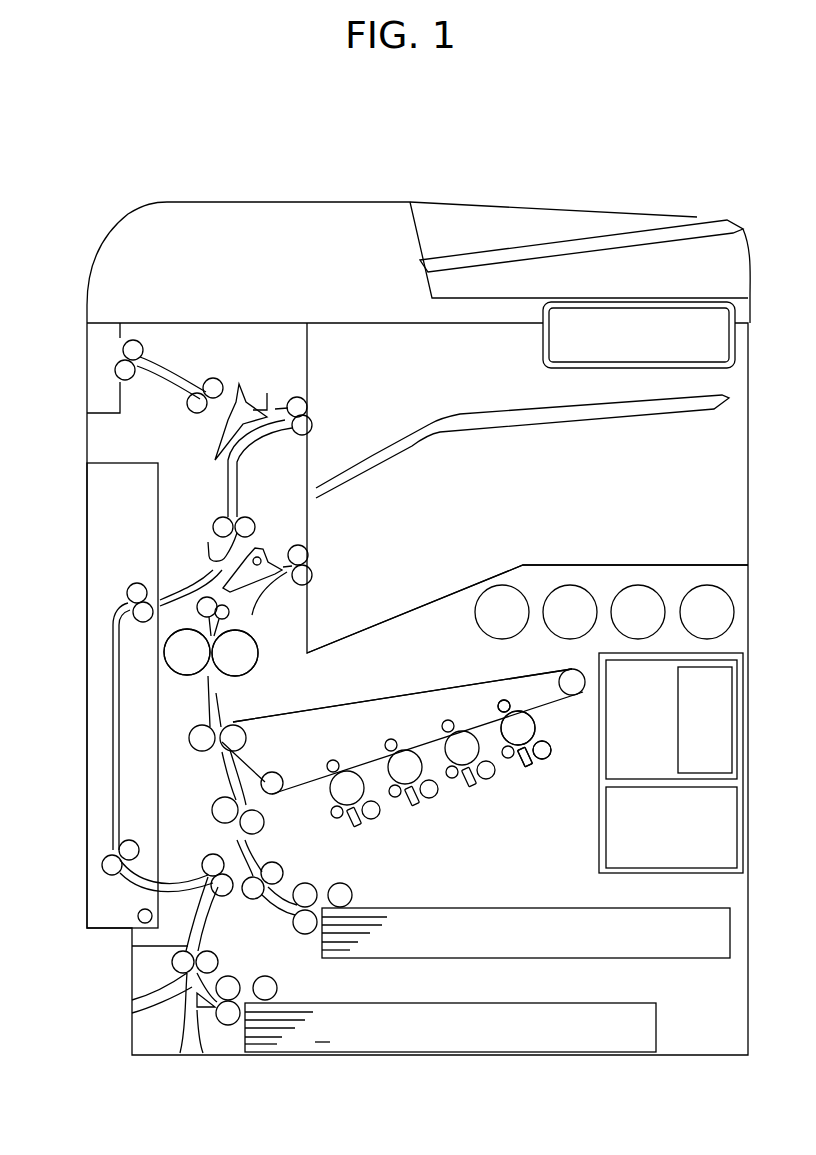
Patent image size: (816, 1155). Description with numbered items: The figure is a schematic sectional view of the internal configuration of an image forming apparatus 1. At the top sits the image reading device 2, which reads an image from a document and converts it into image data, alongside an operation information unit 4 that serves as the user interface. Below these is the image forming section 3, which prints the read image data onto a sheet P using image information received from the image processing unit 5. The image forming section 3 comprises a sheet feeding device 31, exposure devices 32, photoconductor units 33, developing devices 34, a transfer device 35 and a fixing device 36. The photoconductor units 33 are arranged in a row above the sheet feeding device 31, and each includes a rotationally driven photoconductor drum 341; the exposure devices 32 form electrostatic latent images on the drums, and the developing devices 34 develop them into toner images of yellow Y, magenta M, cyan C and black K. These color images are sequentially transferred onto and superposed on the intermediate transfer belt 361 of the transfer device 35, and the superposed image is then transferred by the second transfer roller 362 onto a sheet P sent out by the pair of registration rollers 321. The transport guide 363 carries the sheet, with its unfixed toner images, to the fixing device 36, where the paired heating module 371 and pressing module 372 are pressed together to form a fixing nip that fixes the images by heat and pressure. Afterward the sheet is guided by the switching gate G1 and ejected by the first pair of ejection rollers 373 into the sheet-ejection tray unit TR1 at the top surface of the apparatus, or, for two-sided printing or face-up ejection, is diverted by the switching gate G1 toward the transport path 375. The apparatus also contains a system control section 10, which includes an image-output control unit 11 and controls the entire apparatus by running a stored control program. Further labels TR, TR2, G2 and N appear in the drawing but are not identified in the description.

The image forming apparatus 1 is at (100, 198).
The image reading device 2 is at (276, 281).
The operation information unit 4 is at (649, 352).
The image processing unit 5 is at (682, 842).
The system control section 10 is at (647, 696).
The image-output control unit 11 is at (722, 736).
The image forming section 3 is at (483, 846).
The sheet feeding device 31 is at (356, 890).
The exposure device 32 is at (522, 762).
The photoconductor unit 33 is at (501, 733).
The developing device 34 is at (555, 762).
The photoconductor drum 341 is at (520, 728).
The transfer device 35 is at (330, 695).
The intermediate transfer belt 361 is at (388, 700).
The second transfer roller 362 is at (199, 753).
The transport guide 363 is at (210, 697).
The fixing device 36 is at (268, 628).
The heating module 371 is at (240, 675).
The pressing module 372 is at (190, 676).
The first pair of ejection rollers 373 is at (310, 573).
The transport path 375 is at (222, 492).
The pair of registration rollers 321 is at (266, 822).
The secondary transfer position TR is at (233, 757).
The sheet-ejection tray unit TR1 is at (462, 575).
The upper discharge tray TR2 is at (421, 431).
The switching gate G1 is at (268, 553).
The second gate G2 is at (265, 393).
The fixing nip N is at (212, 636).
The black K is at (510, 625).
The cyan C is at (578, 625).
The magenta M is at (648, 625).
The yellow Y is at (715, 625).
The sheet P is at (407, 949).